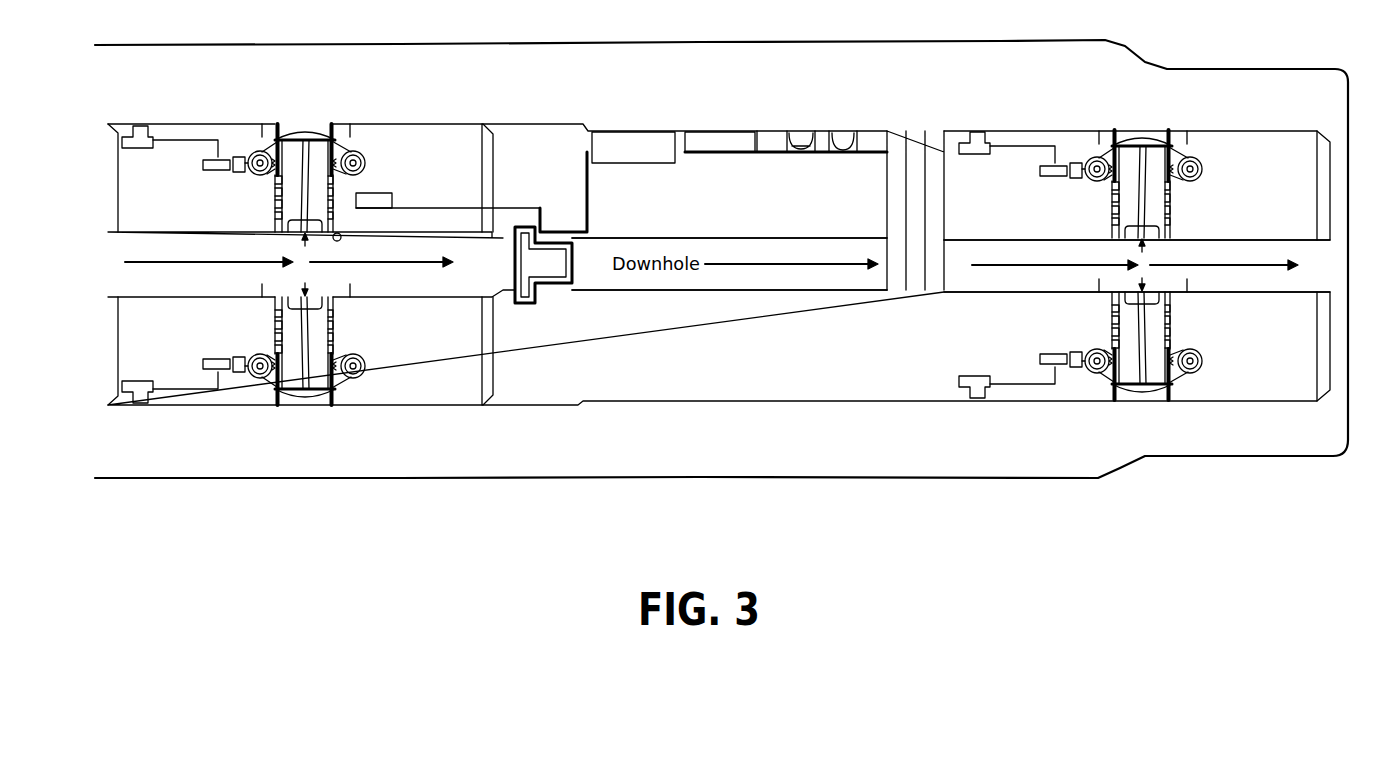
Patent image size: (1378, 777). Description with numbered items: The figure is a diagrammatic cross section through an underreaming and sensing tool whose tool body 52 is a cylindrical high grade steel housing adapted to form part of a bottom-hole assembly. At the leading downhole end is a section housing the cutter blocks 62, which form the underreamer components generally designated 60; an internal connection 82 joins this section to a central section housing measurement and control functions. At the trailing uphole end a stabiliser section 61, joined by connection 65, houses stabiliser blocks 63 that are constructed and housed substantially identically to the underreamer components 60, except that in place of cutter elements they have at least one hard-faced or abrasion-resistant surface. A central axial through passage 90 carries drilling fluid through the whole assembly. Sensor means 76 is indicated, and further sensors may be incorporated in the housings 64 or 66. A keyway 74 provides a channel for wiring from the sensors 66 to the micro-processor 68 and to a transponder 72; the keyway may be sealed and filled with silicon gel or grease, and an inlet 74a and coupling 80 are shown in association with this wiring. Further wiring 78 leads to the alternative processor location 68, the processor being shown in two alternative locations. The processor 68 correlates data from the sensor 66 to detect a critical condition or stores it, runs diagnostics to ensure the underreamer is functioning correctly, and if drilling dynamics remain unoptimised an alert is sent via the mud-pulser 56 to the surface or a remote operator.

The tool body 52 is at (677, 399).
The mud-pulser 56 is at (548, 273).
The underreamer components 60 is at (1128, 427).
The stabiliser section 61 is at (297, 424).
The cutter blocks 62 is at (1148, 162).
The stabiliser blocks 63 is at (305, 159).
The sensor housing 64 is at (845, 128).
The connection 65 is at (488, 392).
The sensor housing 66 is at (800, 128).
The micro-processor 68 is at (204, 191).
The transponder 72 is at (632, 148).
The keyway 74 is at (582, 192).
The conduit inlet 74a is at (375, 192).
The sensor means 76 is at (142, 109).
The wiring 78 is at (186, 114).
The coupling 80 is at (235, 189).
The internal connection 82 is at (908, 279).
The central axial through passage 90 is at (704, 284).